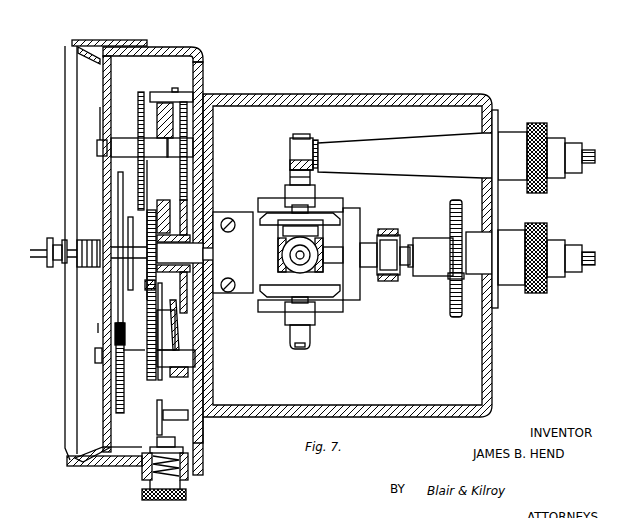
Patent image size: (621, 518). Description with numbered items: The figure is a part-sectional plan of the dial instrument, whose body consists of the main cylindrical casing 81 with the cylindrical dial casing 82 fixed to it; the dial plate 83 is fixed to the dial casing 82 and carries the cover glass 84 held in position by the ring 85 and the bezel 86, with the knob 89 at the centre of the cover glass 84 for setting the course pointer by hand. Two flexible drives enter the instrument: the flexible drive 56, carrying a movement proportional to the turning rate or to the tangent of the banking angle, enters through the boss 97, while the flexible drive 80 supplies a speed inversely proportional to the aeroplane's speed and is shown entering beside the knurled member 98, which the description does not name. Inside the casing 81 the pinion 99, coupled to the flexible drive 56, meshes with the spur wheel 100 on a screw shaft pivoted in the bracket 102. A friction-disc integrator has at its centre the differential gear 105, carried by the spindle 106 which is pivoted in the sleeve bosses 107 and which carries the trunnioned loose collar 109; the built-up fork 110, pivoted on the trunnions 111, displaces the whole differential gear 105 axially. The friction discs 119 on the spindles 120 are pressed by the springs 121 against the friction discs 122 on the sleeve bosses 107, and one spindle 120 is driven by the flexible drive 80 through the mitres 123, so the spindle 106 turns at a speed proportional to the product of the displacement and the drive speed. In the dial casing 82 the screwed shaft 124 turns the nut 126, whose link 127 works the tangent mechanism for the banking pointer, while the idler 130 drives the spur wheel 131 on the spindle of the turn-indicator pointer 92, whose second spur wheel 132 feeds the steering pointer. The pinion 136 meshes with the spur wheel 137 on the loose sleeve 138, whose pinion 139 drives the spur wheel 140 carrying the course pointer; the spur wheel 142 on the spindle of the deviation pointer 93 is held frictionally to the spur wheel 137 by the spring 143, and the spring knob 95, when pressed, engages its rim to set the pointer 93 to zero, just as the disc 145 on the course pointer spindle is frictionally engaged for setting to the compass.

The flexible drive 56 is at (590, 265).
The flexible drive 80 is at (590, 150).
The main cylindrical casing 81 is at (492, 343).
The cylindrical dial casing 82 is at (165, 48).
The dial plate 83 is at (102, 408).
The cover glass 84 is at (67, 353).
The ring 85 is at (88, 40).
The bezel 86 is at (87, 56).
The knob 89 is at (47, 255).
The pointer 92 is at (100, 126).
The pointer 93 is at (98, 333).
The spring knob 95 is at (187, 495).
The boss 97 is at (512, 278).
The knurled knob 98 is at (512, 140).
The pinion 99 is at (453, 266).
The spur wheel 100 is at (450, 295).
The bracket 102 is at (425, 238).
The differential gear 105 is at (320, 244).
The spindle 106 is at (413, 257).
The sleeve bosses 107 is at (250, 213).
The trunnioned loose collar 109 is at (372, 268).
The built-up fork 110 is at (397, 233).
The trunnions 111 is at (387, 229).
The friction discs 119 is at (320, 218).
The spindles 120 is at (300, 148).
The springs 121 is at (293, 134).
The friction discs 122 is at (323, 253).
The mitres 123 is at (333, 131).
The screwed shaft 124 is at (157, 122).
The nut 126 is at (188, 186).
The link 127 is at (150, 186).
The idler 130 is at (187, 213).
The spur wheel 131 is at (187, 133).
The spur wheel 132 is at (142, 100).
The pinion 136 is at (157, 253).
The spur wheel 137 is at (147, 423).
The loose sleeve 138 is at (133, 368).
The pinion 139 is at (116, 380).
The spur wheel 140 is at (118, 303).
The spur wheel 142 is at (203, 422).
The spring 143 is at (155, 400).
The disc 145 is at (128, 275).